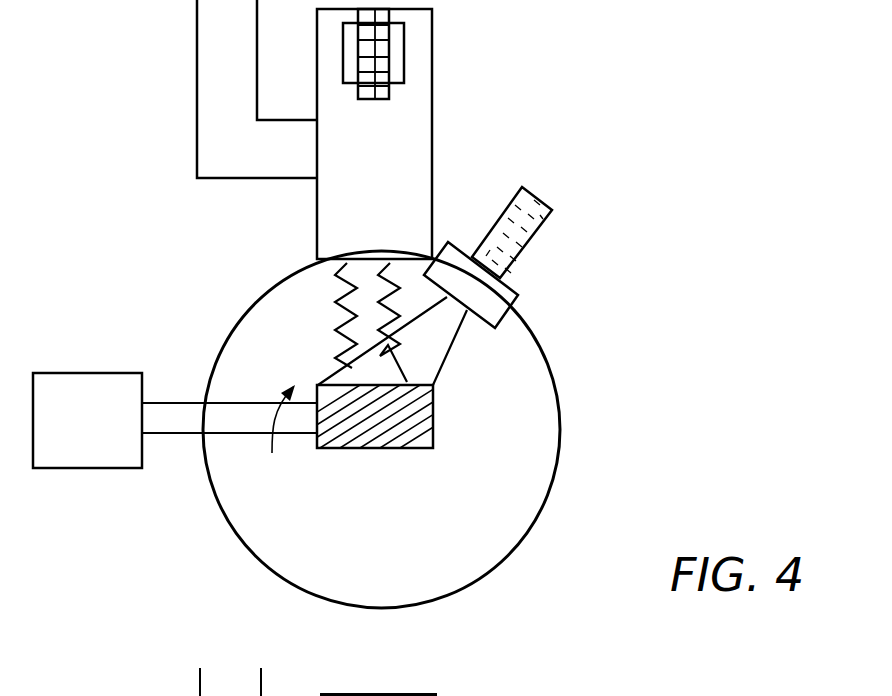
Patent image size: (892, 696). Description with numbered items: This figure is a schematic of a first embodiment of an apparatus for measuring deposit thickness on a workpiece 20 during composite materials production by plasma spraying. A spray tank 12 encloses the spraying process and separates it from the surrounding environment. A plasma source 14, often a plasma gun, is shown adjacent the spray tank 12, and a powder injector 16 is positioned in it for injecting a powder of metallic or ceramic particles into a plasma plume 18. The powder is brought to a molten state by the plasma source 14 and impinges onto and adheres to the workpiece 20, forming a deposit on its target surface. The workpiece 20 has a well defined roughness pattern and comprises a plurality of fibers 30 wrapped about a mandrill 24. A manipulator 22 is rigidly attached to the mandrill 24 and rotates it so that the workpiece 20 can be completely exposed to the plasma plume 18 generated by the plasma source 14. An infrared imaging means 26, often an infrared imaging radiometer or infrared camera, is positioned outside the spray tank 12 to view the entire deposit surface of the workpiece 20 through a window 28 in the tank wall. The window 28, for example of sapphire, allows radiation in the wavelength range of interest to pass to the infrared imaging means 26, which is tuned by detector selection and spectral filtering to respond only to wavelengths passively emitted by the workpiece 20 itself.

The spray tank 12 is at (559, 398).
The plasma source 14 is at (418, 173).
The powder injector 16 is at (389, 50).
The plasma plume 18 is at (367, 328).
The workpiece 20 is at (432, 420).
The manipulator 22 is at (95, 468).
The mandrill 24 is at (313, 440).
The infrared imaging means 26 is at (503, 238).
The window 28 is at (517, 300).
The fibers 30 is at (349, 448).